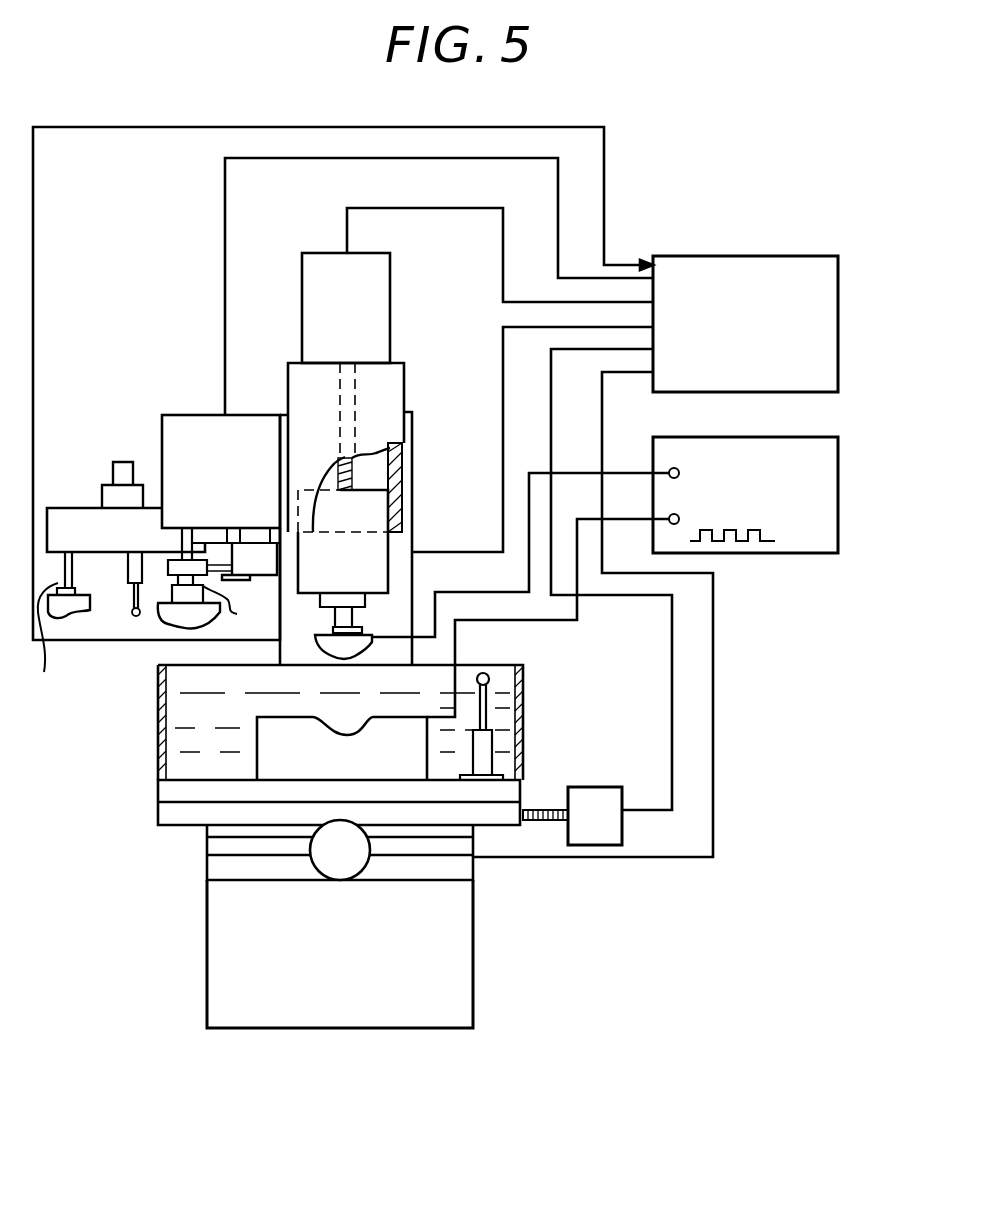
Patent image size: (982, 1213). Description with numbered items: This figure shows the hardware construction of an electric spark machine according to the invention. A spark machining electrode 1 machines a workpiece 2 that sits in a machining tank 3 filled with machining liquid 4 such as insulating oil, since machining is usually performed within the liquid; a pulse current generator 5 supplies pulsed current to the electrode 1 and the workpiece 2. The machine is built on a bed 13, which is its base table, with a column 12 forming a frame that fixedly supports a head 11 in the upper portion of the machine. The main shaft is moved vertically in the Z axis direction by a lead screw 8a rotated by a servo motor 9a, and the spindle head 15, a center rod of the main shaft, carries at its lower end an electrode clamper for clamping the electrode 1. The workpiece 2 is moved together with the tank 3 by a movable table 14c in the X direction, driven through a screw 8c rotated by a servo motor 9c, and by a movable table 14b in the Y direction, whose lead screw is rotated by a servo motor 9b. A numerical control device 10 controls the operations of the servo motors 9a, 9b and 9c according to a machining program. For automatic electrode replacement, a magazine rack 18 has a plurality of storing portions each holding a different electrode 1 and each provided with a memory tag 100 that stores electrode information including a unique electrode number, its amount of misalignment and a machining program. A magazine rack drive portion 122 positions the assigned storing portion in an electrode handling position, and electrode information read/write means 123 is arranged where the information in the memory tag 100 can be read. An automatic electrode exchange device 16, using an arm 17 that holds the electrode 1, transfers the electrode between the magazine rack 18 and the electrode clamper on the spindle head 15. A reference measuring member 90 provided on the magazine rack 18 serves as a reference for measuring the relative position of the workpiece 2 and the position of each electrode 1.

The spark machining electrode 1 is at (362, 627).
The workpiece 2 is at (257, 718).
The machining tank 3 is at (158, 767).
The machining liquid 4 is at (158, 732).
The pulse current generator 5 is at (757, 553).
The lead screw 8a is at (356, 412).
The screw 8c is at (545, 809).
The servo motor 9a is at (390, 291).
The servo motor 9b is at (318, 864).
The servo motor 9c is at (600, 787).
The numerical control device 10 is at (738, 256).
The head 11 is at (404, 365).
The column 12 is at (404, 456).
The bed 13 is at (210, 958).
The movable table 14b is at (207, 853).
The movable table 14c is at (165, 812).
The spindle head 15 is at (383, 546).
The automatic electrode exchange device 16 is at (184, 414).
The arm 17 is at (190, 560).
The magazine rack 18 is at (76, 508).
The reference measuring member 90 is at (130, 570).
The memory tag 100 is at (318, 604).
The magazine rack drive portion 122 is at (120, 460).
The electrode information read/write means 123 is at (225, 543).